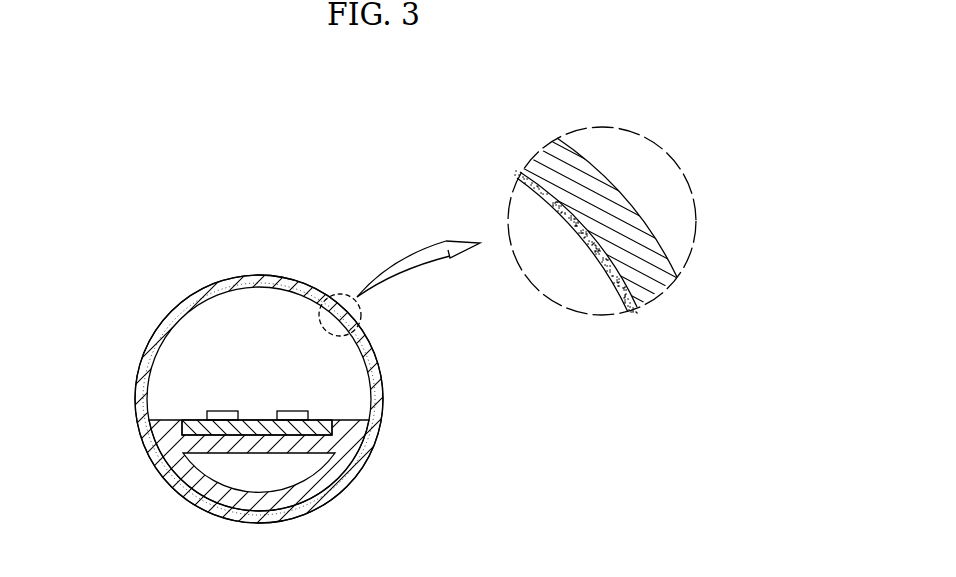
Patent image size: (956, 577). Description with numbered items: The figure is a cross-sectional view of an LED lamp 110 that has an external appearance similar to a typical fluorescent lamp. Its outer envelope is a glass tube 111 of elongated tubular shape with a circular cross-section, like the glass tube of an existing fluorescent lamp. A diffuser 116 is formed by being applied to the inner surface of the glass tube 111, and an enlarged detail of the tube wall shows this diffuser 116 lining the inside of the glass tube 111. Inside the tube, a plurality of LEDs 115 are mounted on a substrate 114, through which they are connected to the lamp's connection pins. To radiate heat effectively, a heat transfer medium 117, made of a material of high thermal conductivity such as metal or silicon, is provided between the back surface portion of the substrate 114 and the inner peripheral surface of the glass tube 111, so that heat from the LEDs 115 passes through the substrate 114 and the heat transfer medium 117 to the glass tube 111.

The LED lamp 110 is at (348, 330).
The glass tube 111 is at (146, 350).
The substrate 114 is at (194, 420).
The LEDs 115 is at (303, 412).
The diffuser 116 is at (597, 258).
The heat transfer medium 117 is at (342, 445).